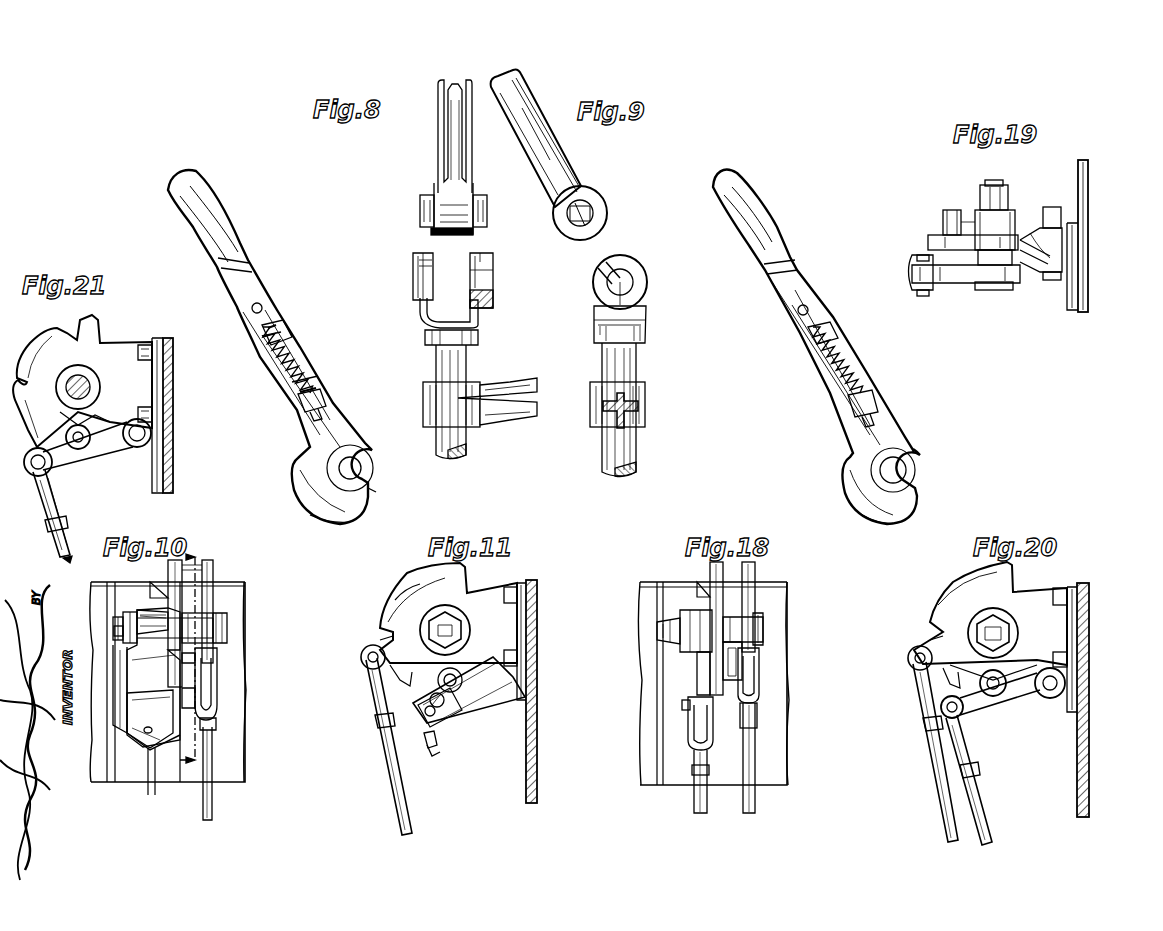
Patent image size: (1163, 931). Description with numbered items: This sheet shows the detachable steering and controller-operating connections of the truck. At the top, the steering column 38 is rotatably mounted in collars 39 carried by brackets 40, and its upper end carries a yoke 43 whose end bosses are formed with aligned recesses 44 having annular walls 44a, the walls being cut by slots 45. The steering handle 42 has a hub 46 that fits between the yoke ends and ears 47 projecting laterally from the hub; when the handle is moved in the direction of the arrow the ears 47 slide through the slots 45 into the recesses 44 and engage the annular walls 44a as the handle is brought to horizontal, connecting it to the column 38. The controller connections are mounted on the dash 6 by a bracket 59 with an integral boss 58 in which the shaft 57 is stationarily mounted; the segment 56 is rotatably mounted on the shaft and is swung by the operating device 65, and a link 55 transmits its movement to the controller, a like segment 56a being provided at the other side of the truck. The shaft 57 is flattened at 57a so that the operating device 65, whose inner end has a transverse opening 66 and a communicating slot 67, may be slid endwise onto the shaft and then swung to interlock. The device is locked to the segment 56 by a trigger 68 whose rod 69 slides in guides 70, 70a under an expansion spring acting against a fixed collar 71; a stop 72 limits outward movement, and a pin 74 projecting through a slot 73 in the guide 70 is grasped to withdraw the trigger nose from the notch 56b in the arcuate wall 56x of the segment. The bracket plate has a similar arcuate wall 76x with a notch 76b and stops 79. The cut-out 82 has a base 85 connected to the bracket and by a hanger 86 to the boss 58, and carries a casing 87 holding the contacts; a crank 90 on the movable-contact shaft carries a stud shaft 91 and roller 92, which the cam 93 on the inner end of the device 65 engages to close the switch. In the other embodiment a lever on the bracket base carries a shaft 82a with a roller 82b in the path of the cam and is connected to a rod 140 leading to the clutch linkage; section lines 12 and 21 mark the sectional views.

In FIG. 8, the handle 42 is at (436, 150).
In FIG. 9, the handle 42 is at (576, 168).
In FIG. 8, the ears 47 is at (418, 212).
In FIG. 9, the ears 47 is at (590, 209).
In FIG. 8, the hub 46 is at (474, 232).
In FIG. 8, the slots 45 is at (465, 258).
In FIG. 9, the slots 45 is at (634, 265).
In FIG. 8, the recesses 44 is at (494, 288).
In FIG. 9, the annular walls 44a is at (582, 250).
In FIG. 8, the yoke 43 is at (426, 326).
In FIG. 8, the steering column 38 is at (436, 442).
In FIG. 9, the steering column 38 is at (638, 362).
In FIG. 8, the collars 39 is at (422, 410).
In FIG. 9, the collars 39 is at (646, 395).
In FIG. 8, the brackets 40 is at (522, 430).
In FIG. 9, the brackets 40 is at (645, 412).
In FIG. 8, the operating device 65 is at (264, 298).
In FIG. 8, the stop 72 is at (263, 306).
In FIG. 8, the guide 70 is at (288, 328).
In FIG. 8, the slot 73 is at (268, 333).
In FIG. 8, the pin 74 is at (275, 342).
In FIG. 8, the rod 69 is at (298, 361).
In FIG. 8, the collar 71 is at (312, 388).
In FIG. 8, the guide 70a is at (326, 400).
In FIG. 8, the trigger 68 is at (290, 391).
In FIG. 8, the opening 66 is at (352, 462).
In FIG. 8, the slot 67 is at (372, 485).
In FIG. 8, the cam 93 is at (343, 526).
In FIG. 19, the section line 21 is at (905, 262).
In FIG. 10, the section line 12 is at (181, 665).
In FIG. 10, the dash 6 is at (240, 755).
In FIG. 11, the dash 6 is at (539, 712).
In FIG. 11, the bracket 59 is at (510, 618).
In FIG. 10, the segment 56 is at (213, 590).
In FIG. 11, the segment 56 is at (402, 585).
In FIG. 10, the arcuate wall 56x is at (213, 595).
In FIG. 11, the segment 56a is at (405, 590).
In FIG. 11, the notch 56b is at (380, 640).
In FIG. 10, the shaft 57 is at (114, 622).
In FIG. 10, the flattened sides 57a is at (213, 630).
In FIG. 10, the boss 58 is at (145, 610).
In FIG. 10, the stops 79 is at (167, 565).
In FIG. 10, the arcuate wall 76x is at (112, 634).
In FIG. 10, the notch 76b is at (162, 660).
In FIG. 10, the hanger 86 is at (115, 683).
In FIG. 10, the crank 90 is at (204, 700).
In FIG. 11, the crank 90 is at (445, 702).
In FIG. 11, the stud shaft 91 is at (462, 682).
In FIG. 11, the roller 92 is at (452, 675).
In FIG. 10, the casing 87 is at (125, 722).
In FIG. 11, the casing 87 is at (470, 724).
In FIG. 10, the base 85 is at (158, 780).
In FIG. 11, the base 85 is at (448, 750).
In FIG. 10, the cut-out 82 is at (150, 752).
In FIG. 11, the cut-out 82 is at (469, 682).
In FIG. 21, the shaft 82a is at (80, 450).
In FIG. 20, the shaft 82a is at (1000, 697).
In FIG. 21, the roller 82b is at (72, 455).
In FIG. 20, the roller 82b is at (978, 705).
In FIG. 10, the link 55 is at (214, 805).
In FIG. 11, the link 55 is at (390, 775).
In FIG. 21, the rod 140 is at (52, 545).
In FIG. 18, the rod 140 is at (693, 800).
In FIG. 20, the rod 140 is at (978, 803).